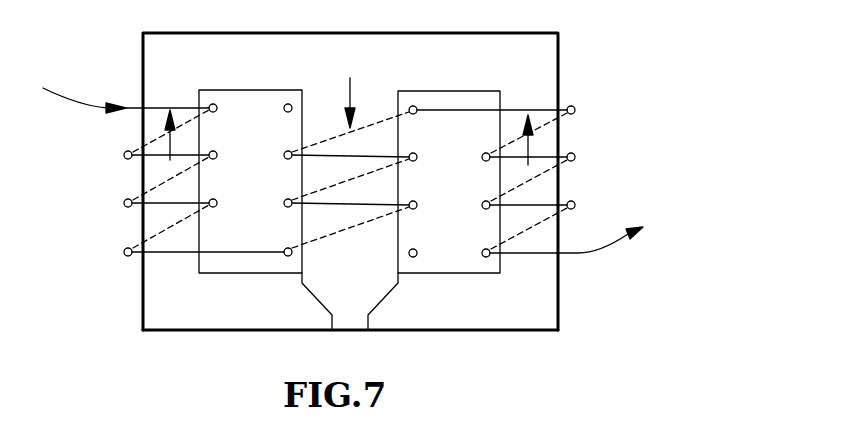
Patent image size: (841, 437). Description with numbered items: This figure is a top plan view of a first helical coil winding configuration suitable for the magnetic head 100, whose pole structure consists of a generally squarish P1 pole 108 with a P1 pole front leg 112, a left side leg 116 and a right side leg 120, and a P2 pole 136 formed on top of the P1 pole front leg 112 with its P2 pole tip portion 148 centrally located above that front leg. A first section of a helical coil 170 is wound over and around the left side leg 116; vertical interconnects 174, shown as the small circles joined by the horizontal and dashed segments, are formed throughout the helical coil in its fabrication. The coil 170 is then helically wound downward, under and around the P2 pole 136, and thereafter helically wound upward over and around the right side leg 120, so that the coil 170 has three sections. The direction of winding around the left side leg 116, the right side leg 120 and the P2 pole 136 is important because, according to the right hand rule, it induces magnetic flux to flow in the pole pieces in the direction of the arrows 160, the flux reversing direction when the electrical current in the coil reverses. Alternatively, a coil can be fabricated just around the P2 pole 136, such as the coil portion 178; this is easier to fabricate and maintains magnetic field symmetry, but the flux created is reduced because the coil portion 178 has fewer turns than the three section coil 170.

The magnetic head 100 is at (645, 30).
The P1 pole 108 is at (548, 88).
The P1 pole front leg 112 is at (492, 315).
The left side leg 116 is at (150, 133).
The right side leg 120 is at (570, 282).
The P2 pole 136 is at (377, 145).
The P2 pole tip portion 148 is at (350, 318).
The arrows 160 is at (348, 86).
The helical coil 170 is at (162, 106).
The vertical interconnects 174 is at (123, 154).
The coil portion 178 is at (352, 206).